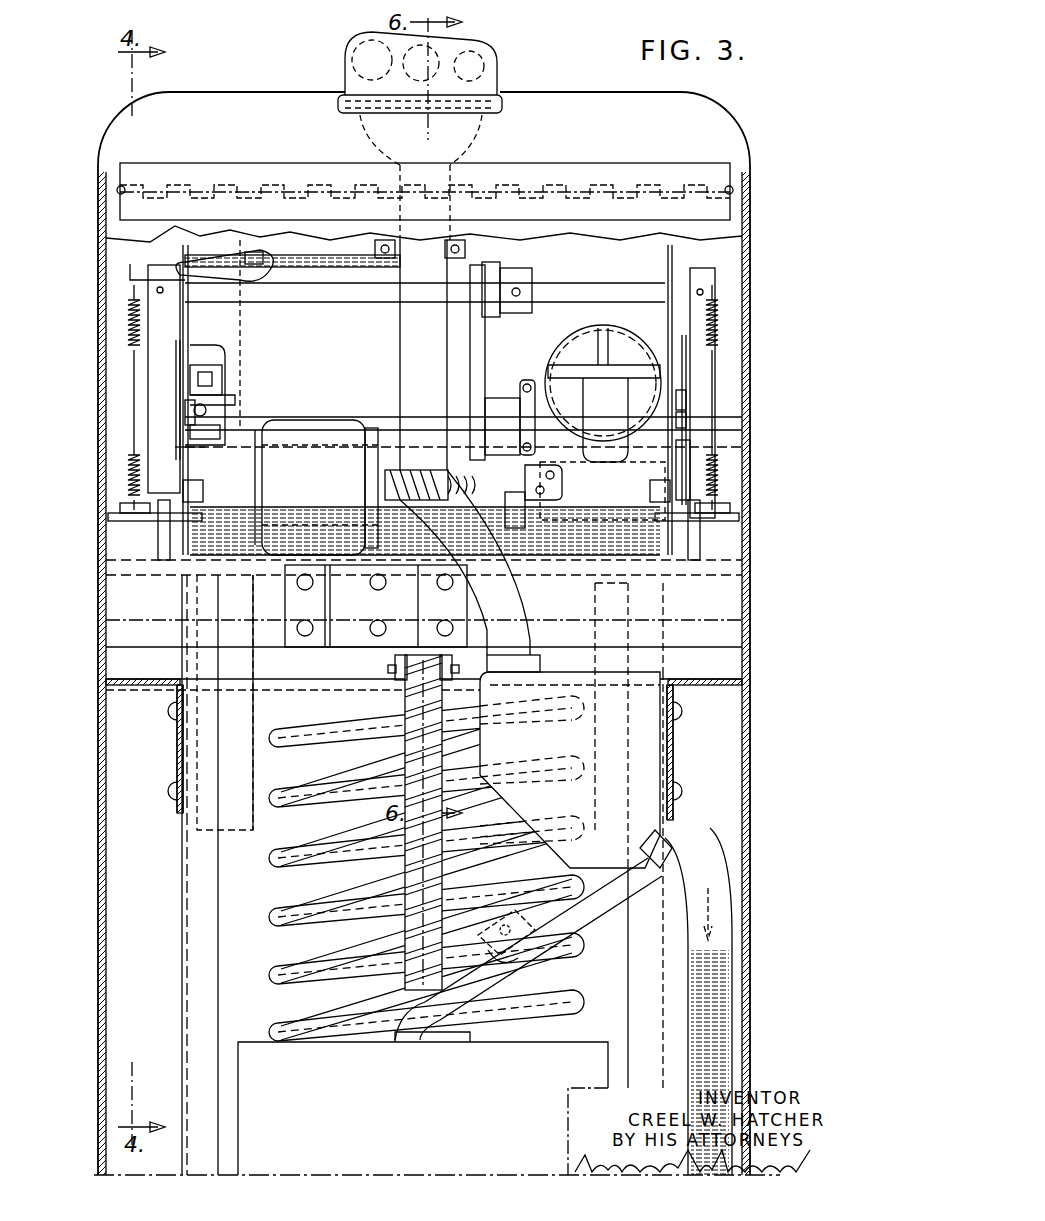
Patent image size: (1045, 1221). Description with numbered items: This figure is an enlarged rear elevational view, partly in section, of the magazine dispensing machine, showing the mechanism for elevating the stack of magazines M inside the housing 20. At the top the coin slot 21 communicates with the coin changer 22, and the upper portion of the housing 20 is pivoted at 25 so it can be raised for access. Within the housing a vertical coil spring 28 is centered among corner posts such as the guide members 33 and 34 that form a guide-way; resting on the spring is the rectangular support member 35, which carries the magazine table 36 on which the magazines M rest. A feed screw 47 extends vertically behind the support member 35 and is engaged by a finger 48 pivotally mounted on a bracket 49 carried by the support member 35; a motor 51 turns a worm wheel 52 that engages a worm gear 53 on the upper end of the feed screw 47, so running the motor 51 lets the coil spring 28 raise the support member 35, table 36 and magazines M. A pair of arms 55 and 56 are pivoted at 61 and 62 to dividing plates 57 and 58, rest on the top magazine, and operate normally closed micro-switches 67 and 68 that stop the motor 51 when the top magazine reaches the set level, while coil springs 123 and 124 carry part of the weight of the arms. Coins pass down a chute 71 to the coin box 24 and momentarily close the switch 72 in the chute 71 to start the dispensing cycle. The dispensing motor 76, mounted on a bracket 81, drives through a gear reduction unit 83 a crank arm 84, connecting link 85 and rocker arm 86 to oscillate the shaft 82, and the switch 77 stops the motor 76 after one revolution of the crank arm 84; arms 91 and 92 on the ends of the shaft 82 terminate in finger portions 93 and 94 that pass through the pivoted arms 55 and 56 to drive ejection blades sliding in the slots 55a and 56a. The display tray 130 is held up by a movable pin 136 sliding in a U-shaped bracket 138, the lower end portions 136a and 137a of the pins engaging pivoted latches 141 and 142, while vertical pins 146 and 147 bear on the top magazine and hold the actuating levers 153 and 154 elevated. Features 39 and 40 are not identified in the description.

The housing 20 is at (747, 777).
The coin slot 21 is at (490, 62).
The coin changer 22 is at (647, 776).
The coin box 24 is at (578, 1045).
The pivot 25 is at (120, 190).
The coil spring 28 is at (290, 873).
The corner post 33 is at (633, 941).
The corner post 34 is at (182, 910).
The support member 35 is at (287, 681).
The magazine table 36 is at (253, 597).
The neck 39 is at (600, 663).
The helical spring 40 is at (243, 789).
The feed screw 47 is at (403, 890).
The finger 48 is at (453, 673).
The bracket 49 is at (397, 673).
The motor 51 is at (330, 483).
The worm wheel 52 is at (414, 476).
The worm gear 53 is at (477, 473).
The arm 55 is at (117, 508).
The slot 55a is at (117, 518).
The arm 56 is at (730, 515).
The slot 56a is at (733, 527).
The dividing plate 57 is at (181, 330).
The dividing plate 58 is at (670, 327).
The pivot 61 is at (173, 487).
The pivot 62 is at (682, 492).
The micro-switch 67 is at (173, 447).
The micro-switch 68 is at (682, 450).
The chute 71 is at (553, 922).
The switch 72 is at (508, 965).
The motor 76 is at (562, 347).
The switch 77 is at (517, 492).
The bracket 81 is at (620, 500).
The shaft 82 is at (384, 293).
The gear reduction unit 83 is at (610, 452).
The crank arm 84 is at (497, 403).
The connecting link 85 is at (477, 360).
The rocker arm 86 is at (525, 275).
The arm 91 is at (157, 347).
The arm 92 is at (694, 370).
The finger portion 93 is at (160, 545).
The finger portion 94 is at (692, 545).
The coil spring 123 is at (130, 315).
The coil spring 124 is at (720, 328).
The tray 130 is at (344, 248).
The movable pin 136 is at (227, 394).
The lower end portion 136a is at (173, 411).
The lower end portion 137a is at (682, 412).
The U-shaped bracket 138 is at (227, 376).
The pivoted latch 141 is at (173, 402).
The pivoted latch 142 is at (682, 403).
The vertical pin 146 is at (221, 356).
The vertical pin 147 is at (673, 356).
The actuating lever 153 is at (173, 370).
The actuating lever 154 is at (684, 383).
The magazines M is at (190, 562).